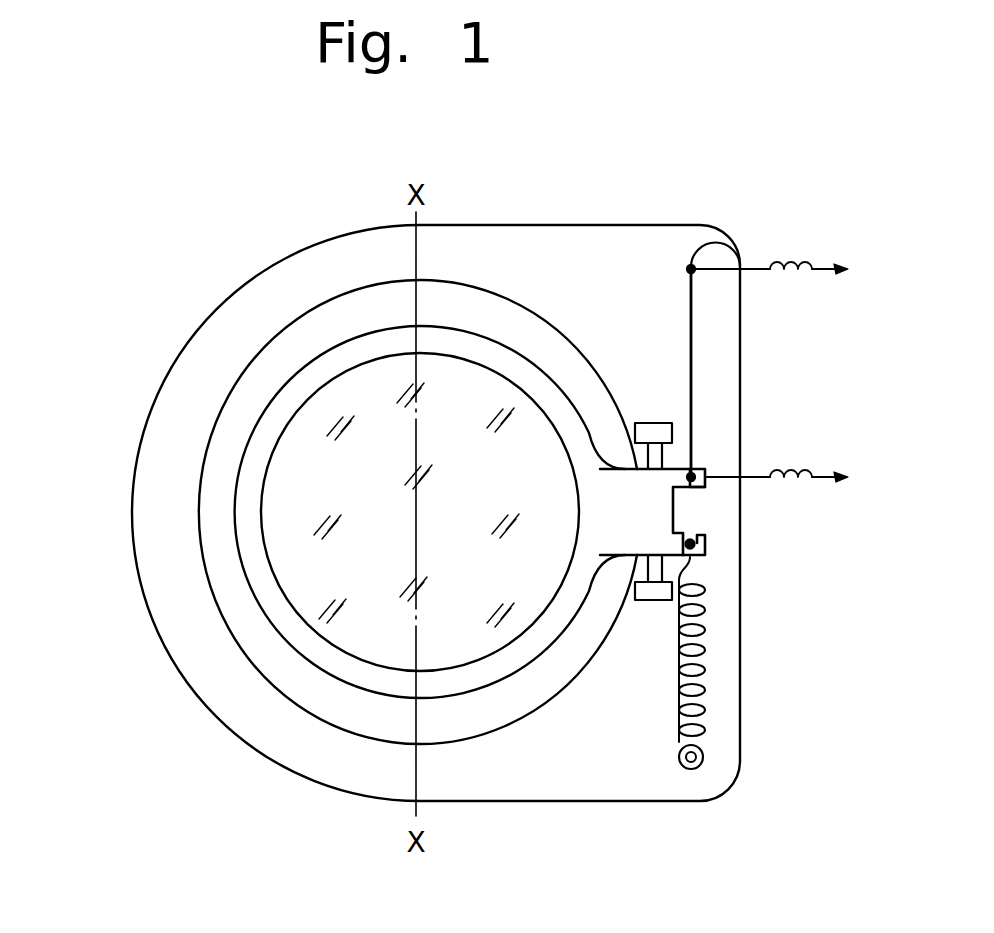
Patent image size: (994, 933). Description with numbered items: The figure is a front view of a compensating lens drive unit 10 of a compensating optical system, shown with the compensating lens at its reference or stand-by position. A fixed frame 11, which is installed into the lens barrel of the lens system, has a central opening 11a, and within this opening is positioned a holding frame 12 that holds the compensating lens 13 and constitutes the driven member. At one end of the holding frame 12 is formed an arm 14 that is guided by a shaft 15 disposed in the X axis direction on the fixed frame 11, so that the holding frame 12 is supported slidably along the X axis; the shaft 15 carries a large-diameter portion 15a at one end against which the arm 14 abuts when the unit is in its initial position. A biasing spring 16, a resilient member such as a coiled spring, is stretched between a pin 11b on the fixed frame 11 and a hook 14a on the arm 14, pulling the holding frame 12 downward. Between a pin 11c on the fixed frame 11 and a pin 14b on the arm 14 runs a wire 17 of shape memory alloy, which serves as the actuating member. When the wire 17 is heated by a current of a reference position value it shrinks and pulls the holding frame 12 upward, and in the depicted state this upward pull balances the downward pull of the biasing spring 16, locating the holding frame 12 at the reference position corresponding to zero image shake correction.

The compensating lens drive unit 10 is at (166, 333).
The fixed frame 11 is at (160, 447).
The central opening 11a is at (278, 352).
The pin 11b is at (698, 747).
The pin 11c is at (733, 245).
The holding frame 12 is at (262, 605).
The compensating lens 13 is at (272, 500).
The arm 14 is at (652, 523).
The hook 14a is at (707, 545).
The pin 14b is at (697, 468).
The shaft 15 is at (657, 452).
The large-diameter portion 15a is at (652, 597).
The biasing spring 16 is at (698, 627).
The wire 17 is at (685, 299).